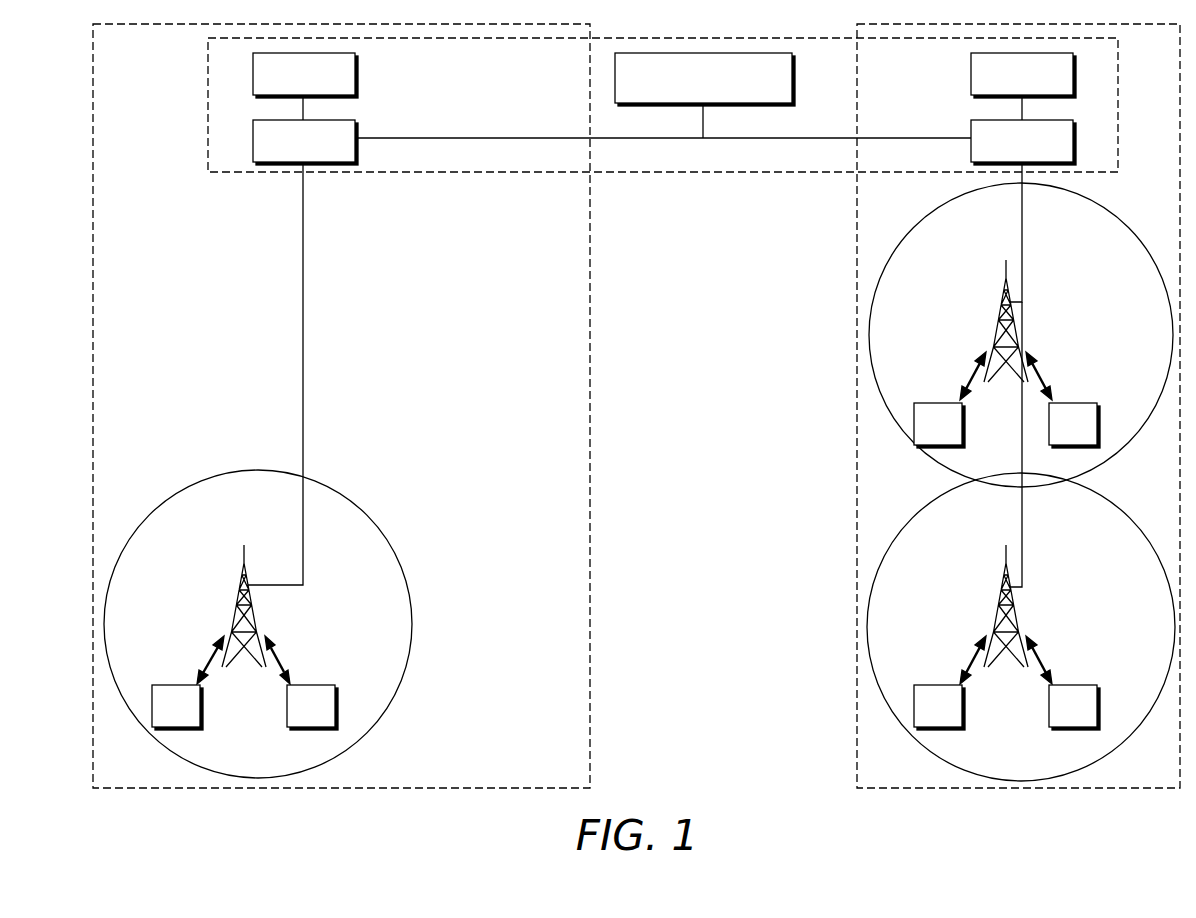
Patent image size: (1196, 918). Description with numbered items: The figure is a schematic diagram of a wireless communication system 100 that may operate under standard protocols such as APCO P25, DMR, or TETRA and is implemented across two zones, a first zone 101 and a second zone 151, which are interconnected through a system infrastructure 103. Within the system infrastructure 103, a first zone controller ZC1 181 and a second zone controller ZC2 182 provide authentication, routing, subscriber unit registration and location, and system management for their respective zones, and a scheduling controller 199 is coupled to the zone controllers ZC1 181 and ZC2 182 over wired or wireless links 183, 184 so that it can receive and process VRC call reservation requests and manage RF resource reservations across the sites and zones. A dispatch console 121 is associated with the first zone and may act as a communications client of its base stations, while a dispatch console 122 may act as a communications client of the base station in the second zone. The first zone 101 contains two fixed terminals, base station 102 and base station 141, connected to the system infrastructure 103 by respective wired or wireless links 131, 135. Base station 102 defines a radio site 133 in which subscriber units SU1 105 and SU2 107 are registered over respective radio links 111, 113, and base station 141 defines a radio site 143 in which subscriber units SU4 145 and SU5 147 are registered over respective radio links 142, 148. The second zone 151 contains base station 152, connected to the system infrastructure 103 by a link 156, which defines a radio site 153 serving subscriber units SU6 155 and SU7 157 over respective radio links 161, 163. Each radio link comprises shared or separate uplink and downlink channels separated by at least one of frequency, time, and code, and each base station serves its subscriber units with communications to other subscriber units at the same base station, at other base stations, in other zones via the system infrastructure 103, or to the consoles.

The wireless communication system 100 is at (18, 97).
The first zone 101 is at (1022, 788).
The second zone 151 is at (325, 788).
The system infrastructure 103 is at (1118, 75).
The scheduling controller 199 is at (792, 77).
The link 183 is at (835, 138).
The link 184 is at (529, 115).
The dispatch console 121 is at (971, 75).
The dispatch console 122 is at (355, 75).
The first zone controller ZC1 181 is at (1062, 120).
The second zone controller ZC2 182 is at (262, 120).
The link 131 is at (1022, 229).
The link 135 is at (1022, 508).
The link 156 is at (303, 517).
The radio site 133 is at (1125, 506).
The radio site 143 is at (1115, 212).
The radio site 153 is at (168, 497).
The base station 102 is at (995, 615).
The base station 141 is at (998, 318).
The base station 152 is at (236, 607).
The radio link 111 is at (972, 655).
The radio link 113 is at (1041, 660).
The radio link 142 is at (972, 374).
The radio link 148 is at (1032, 366).
The radio link 161 is at (213, 655).
The radio link 163 is at (280, 656).
The subscriber unit SU1 105 is at (936, 685).
The subscriber unit SU2 107 is at (1095, 685).
The subscriber unit SU4 145 is at (930, 403).
The subscriber unit SU5 147 is at (1087, 403).
The subscriber unit SU6 155 is at (174, 685).
The subscriber unit SU7 157 is at (333, 685).